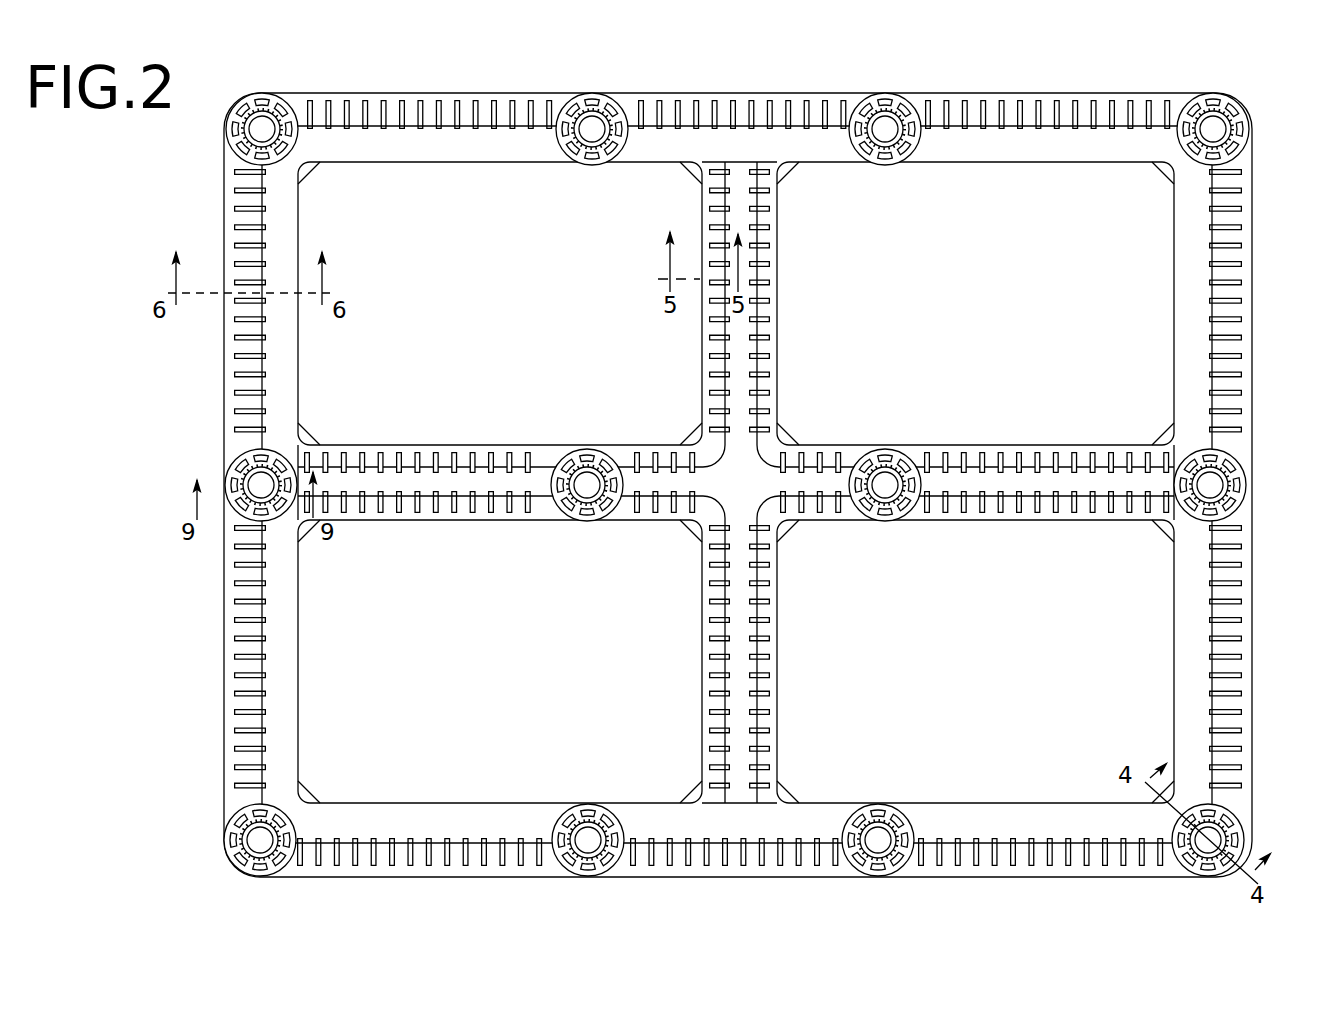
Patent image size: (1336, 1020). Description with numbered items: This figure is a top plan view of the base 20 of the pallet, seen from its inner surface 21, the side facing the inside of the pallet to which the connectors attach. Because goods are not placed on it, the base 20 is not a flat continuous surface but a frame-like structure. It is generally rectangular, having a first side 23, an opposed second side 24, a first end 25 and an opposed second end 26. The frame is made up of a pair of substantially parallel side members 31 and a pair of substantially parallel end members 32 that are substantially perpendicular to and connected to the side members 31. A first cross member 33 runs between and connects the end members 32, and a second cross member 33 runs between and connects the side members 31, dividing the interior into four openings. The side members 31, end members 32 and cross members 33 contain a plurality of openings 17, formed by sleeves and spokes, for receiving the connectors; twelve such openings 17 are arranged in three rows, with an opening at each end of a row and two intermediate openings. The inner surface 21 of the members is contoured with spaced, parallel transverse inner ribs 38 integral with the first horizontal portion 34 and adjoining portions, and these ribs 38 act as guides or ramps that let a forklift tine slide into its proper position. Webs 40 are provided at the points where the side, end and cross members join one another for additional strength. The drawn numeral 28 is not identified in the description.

The openings 17 is at (268, 127).
The base 20 is at (983, 88).
The inner surface 21 is at (1105, 99).
The first side 23 is at (713, 88).
The second side 24 is at (662, 879).
The first end 25 is at (190, 446).
The second end 26 is at (1265, 491).
The ribs 28 is at (421, 97).
The side members 31 is at (985, 150).
The end members 32 is at (1253, 243).
The cross member 33 is at (461, 516).
The first horizontal portion 34 is at (778, 347).
The transverse inner ribs 38 is at (240, 298).
The webs 40 is at (305, 531).